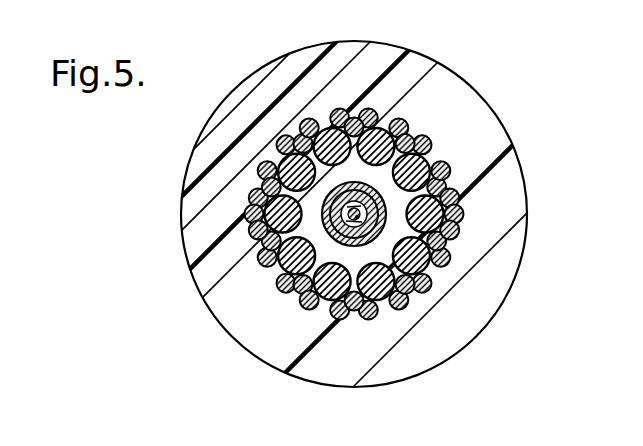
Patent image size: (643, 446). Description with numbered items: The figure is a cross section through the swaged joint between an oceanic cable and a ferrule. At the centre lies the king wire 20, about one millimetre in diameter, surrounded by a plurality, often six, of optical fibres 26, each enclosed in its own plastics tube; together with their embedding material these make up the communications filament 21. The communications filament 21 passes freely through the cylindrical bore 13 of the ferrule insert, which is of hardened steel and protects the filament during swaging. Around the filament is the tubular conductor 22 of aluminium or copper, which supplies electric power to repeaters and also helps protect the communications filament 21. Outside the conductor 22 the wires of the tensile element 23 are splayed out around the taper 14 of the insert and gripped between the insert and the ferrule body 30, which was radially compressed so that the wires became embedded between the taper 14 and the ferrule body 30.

The ferrule body 30 is at (465, 102).
The king wire 20 is at (272, 176).
The communications filament 21 is at (313, 118).
The cylindrical bore 13 is at (450, 167).
The taper 14 is at (459, 197).
The tensile element 23 is at (462, 222).
The optical fibres 26 is at (250, 248).
The tubular conductor 22 is at (321, 312).